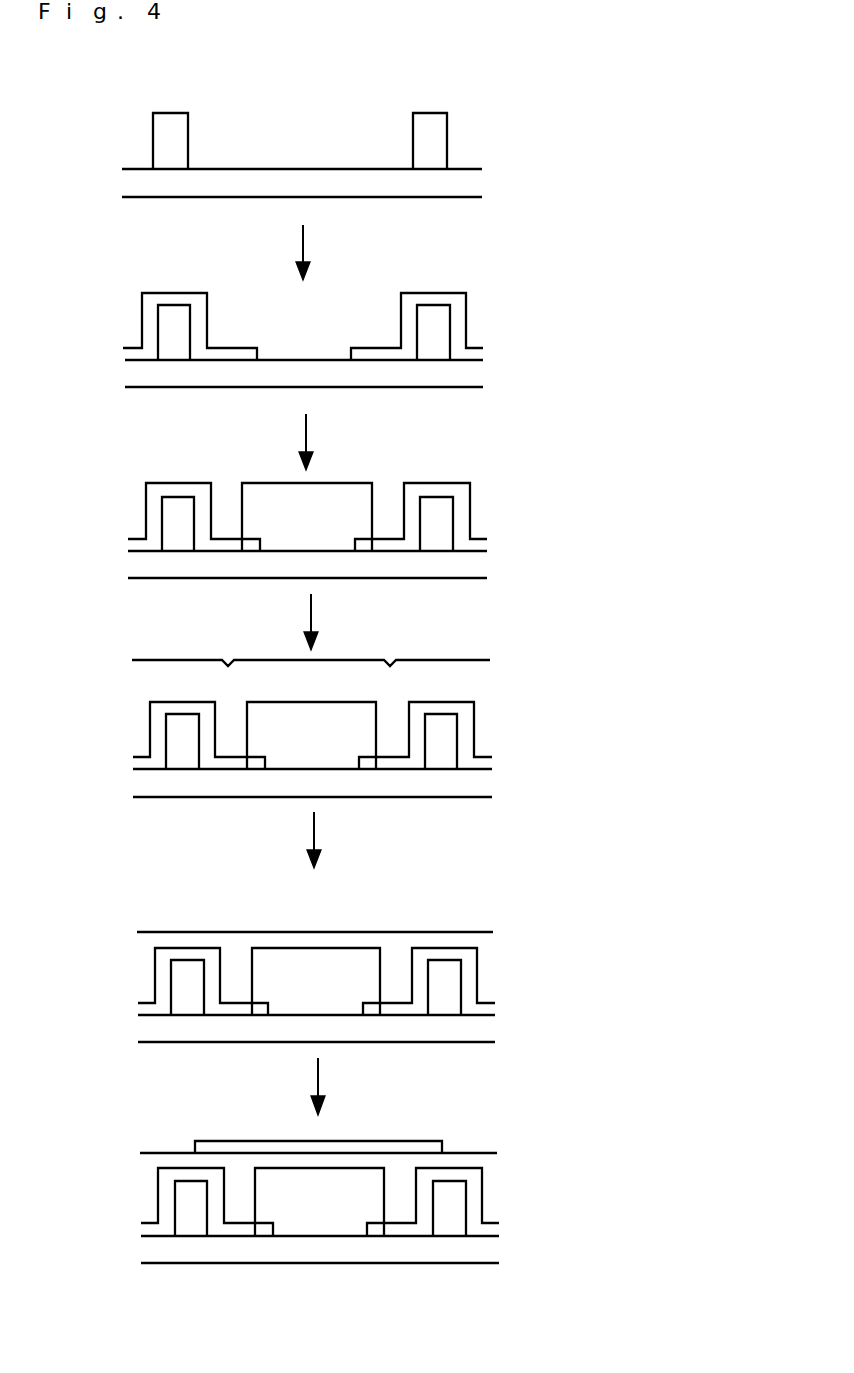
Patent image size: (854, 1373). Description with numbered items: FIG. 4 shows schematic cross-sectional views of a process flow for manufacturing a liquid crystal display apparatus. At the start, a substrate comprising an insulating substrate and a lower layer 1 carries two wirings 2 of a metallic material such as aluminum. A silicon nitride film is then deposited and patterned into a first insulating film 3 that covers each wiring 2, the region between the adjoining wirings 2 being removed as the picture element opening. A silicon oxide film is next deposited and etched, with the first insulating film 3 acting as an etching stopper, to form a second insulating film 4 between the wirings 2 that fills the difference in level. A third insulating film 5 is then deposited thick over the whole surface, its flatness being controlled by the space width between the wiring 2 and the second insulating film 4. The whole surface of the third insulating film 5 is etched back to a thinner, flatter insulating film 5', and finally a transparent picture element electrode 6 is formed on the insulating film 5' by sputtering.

The lower layer 1 is at (300, 186).
The wiring 2 is at (434, 141).
The first insulating film 3 is at (224, 352).
The second insulating film 4 is at (297, 493).
The third insulating film 5 is at (311, 648).
The etched-back third insulating film 5' is at (315, 917).
The picture element electrode 6 is at (275, 1145).